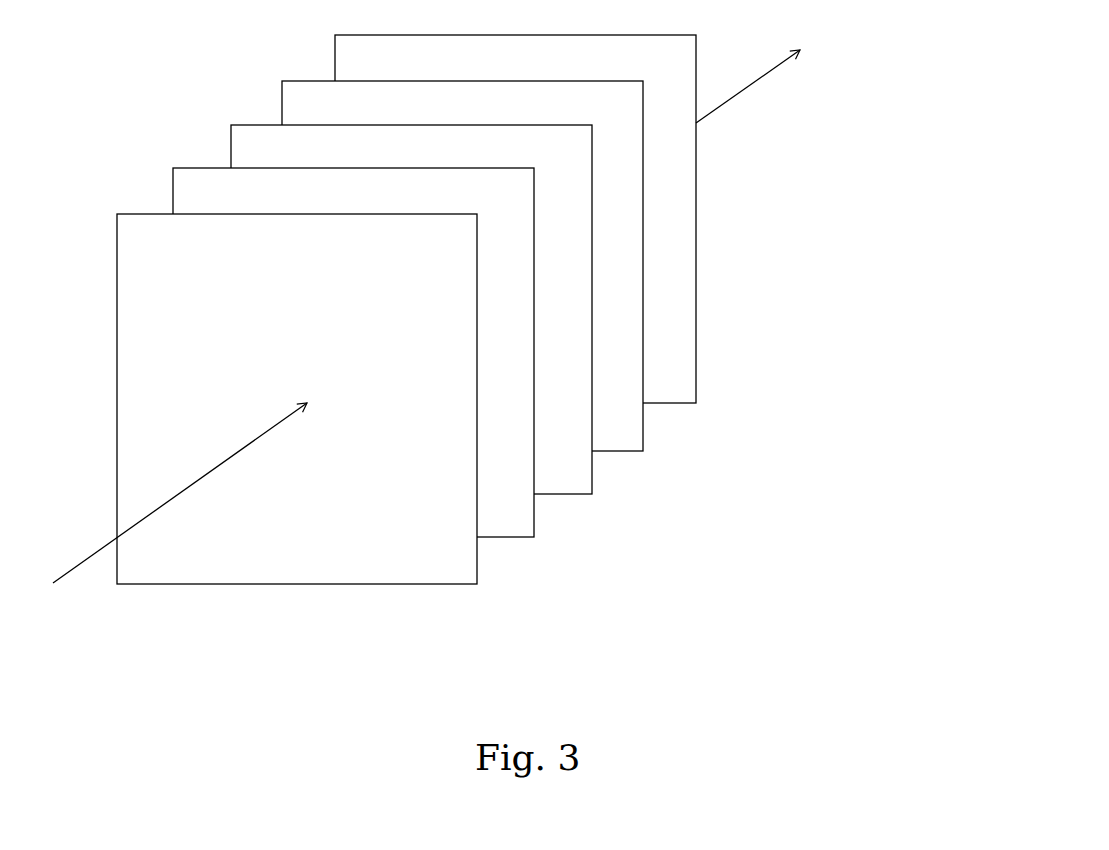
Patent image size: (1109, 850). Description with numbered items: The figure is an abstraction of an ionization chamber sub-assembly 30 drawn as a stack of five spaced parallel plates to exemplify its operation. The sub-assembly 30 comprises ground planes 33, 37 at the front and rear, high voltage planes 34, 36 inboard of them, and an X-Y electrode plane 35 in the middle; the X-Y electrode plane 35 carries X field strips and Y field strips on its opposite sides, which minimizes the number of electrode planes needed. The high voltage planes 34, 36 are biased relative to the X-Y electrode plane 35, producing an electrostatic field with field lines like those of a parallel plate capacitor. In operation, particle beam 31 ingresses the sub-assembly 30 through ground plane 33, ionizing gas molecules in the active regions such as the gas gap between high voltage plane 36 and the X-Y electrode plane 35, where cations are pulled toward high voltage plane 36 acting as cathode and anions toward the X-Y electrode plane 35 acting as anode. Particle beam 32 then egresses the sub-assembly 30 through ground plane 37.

The ionization chamber sub-assembly 30 is at (255, 640).
The particle beam 31 is at (80, 640).
The particle beam 32 is at (740, 118).
The ground plane 33 is at (440, 547).
The high voltage plane 34 is at (495, 508).
The X-Y electrode plane 35 is at (553, 465).
The high voltage plane 36 is at (605, 422).
The ground plane 37 is at (661, 372).